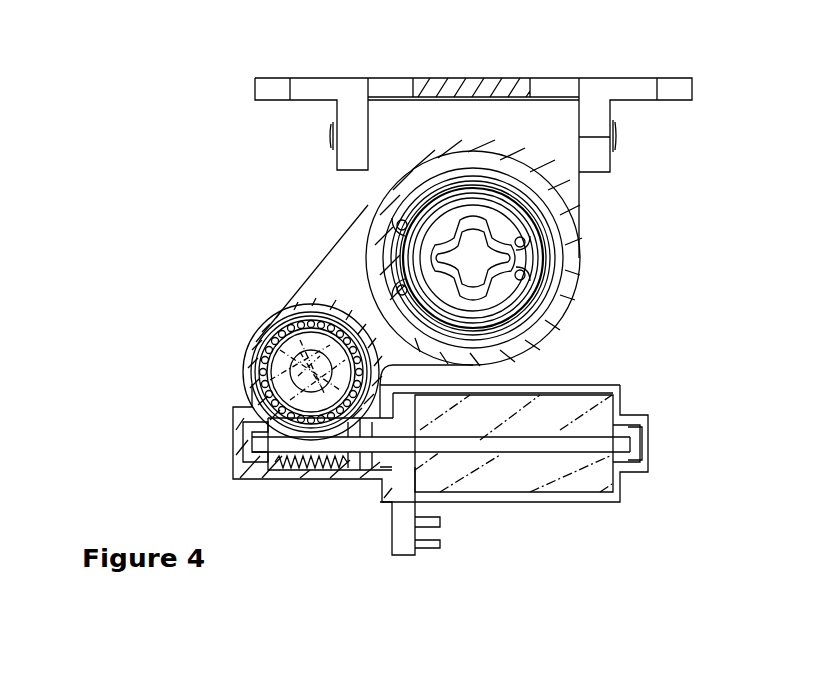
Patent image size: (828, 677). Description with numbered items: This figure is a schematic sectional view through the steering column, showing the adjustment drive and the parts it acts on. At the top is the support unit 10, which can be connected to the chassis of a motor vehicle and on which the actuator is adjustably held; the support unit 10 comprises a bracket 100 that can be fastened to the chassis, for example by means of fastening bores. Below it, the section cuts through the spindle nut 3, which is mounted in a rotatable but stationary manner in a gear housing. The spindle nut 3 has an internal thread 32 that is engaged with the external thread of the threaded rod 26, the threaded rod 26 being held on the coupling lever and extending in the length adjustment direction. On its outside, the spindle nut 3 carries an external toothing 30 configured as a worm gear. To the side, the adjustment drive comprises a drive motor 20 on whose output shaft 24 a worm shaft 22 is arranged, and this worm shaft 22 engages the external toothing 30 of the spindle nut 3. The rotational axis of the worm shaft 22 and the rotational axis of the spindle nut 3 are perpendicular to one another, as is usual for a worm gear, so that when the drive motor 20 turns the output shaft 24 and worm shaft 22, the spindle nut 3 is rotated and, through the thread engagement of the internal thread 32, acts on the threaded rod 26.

The support unit 10 is at (486, 64).
The bracket 100 is at (353, 97).
The internal thread 32 is at (297, 353).
The spindle nut 3 is at (278, 357).
The external toothing 30 is at (252, 363).
The threaded rod 26 is at (305, 370).
The worm shaft 22 is at (322, 470).
The output shaft 24 is at (448, 442).
The drive motor 20 is at (518, 473).